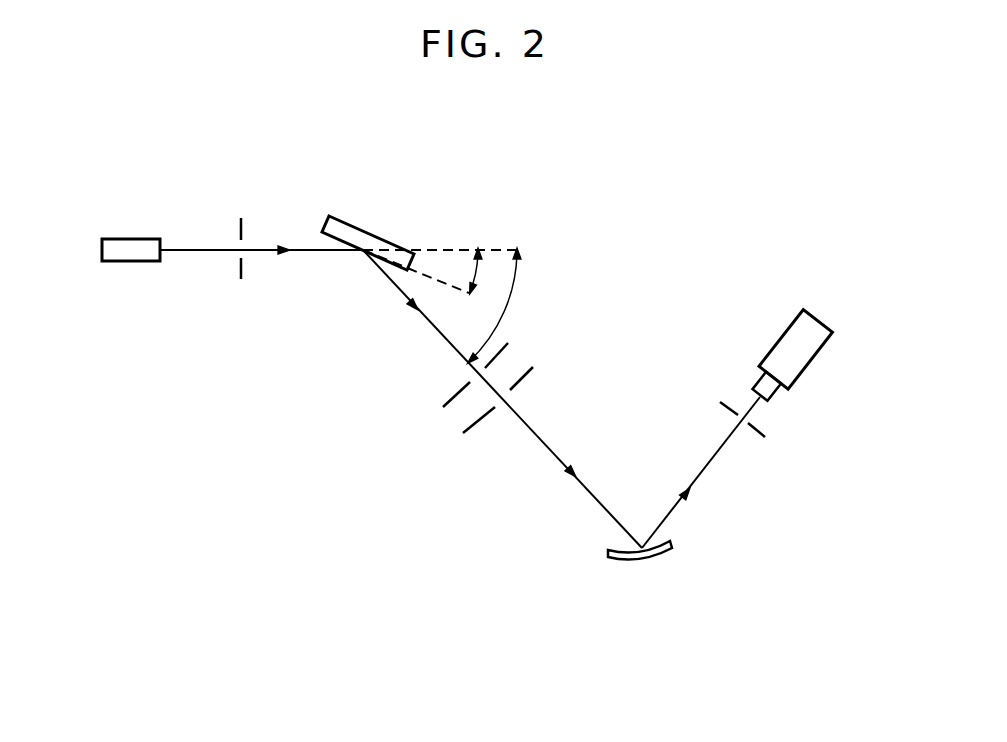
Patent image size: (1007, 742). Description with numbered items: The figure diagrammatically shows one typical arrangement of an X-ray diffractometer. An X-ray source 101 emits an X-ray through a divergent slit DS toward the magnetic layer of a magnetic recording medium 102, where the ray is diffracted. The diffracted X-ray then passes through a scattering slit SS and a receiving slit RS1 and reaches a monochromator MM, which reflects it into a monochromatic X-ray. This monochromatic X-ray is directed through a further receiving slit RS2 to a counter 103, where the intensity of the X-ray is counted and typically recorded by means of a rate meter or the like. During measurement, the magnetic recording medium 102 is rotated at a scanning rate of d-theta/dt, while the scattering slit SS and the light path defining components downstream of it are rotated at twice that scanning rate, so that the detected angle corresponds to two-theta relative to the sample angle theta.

The X-ray source 101 is at (148, 238).
The magnetic recording medium 102 is at (375, 232).
The counter 103 is at (798, 317).
The divergent slit DS is at (241, 266).
The scattering slit SS is at (454, 386).
The receiving slit RS1 is at (479, 419).
The receiving slit RS2 is at (770, 439).
The monochromator MM is at (648, 559).